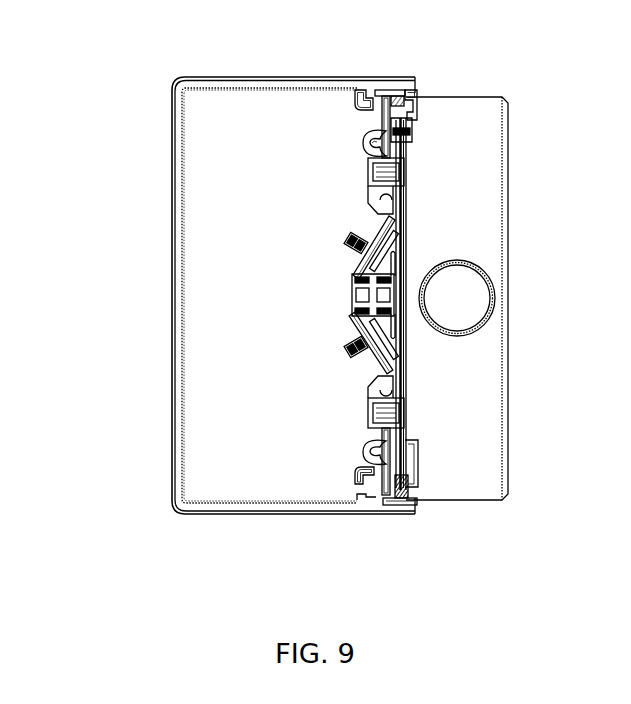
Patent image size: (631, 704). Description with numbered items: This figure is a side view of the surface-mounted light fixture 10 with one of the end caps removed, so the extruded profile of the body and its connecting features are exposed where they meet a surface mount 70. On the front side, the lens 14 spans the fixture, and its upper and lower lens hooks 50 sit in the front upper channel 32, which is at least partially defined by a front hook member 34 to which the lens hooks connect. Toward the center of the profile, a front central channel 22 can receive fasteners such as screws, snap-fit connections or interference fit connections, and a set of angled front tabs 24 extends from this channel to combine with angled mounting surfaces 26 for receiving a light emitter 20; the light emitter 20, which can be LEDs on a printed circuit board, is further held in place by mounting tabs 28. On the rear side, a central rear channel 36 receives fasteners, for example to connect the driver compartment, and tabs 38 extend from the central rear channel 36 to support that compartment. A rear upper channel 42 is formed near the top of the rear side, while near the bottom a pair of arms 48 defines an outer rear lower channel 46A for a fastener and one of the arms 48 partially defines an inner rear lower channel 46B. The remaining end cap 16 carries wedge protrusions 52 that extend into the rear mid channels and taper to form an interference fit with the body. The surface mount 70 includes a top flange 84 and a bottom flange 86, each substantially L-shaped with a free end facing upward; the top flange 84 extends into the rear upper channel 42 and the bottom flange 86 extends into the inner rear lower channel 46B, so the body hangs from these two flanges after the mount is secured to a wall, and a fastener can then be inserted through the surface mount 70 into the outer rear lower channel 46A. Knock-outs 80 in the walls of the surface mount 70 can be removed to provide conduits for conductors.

The light fixture 10 is at (118, 472).
The lens 14 is at (180, 207).
The end cap 16 is at (232, 140).
The light emitter 20 is at (348, 272).
The front central channel 22 is at (352, 294).
The angled front tab 24 is at (358, 284).
The angled mounting surface 26 is at (378, 247).
The mounting tab 28 is at (378, 220).
The front upper channel 32 is at (365, 115).
The front hook member 34 is at (368, 92).
The central rear channel 36 is at (398, 300).
The tab 38 is at (400, 273).
The rear upper channel 42 is at (392, 96).
The outer rear lower channel 46A is at (405, 468).
The inner rear lower channel 46B is at (365, 478).
The arm 48 is at (413, 478).
The lens hook 50 is at (363, 100).
The wedge protrusion 52 is at (402, 174).
The surface mount 70 is at (508, 120).
The knock-out 80 is at (466, 302).
The top flange 84 is at (405, 103).
The bottom flange 86 is at (395, 500).